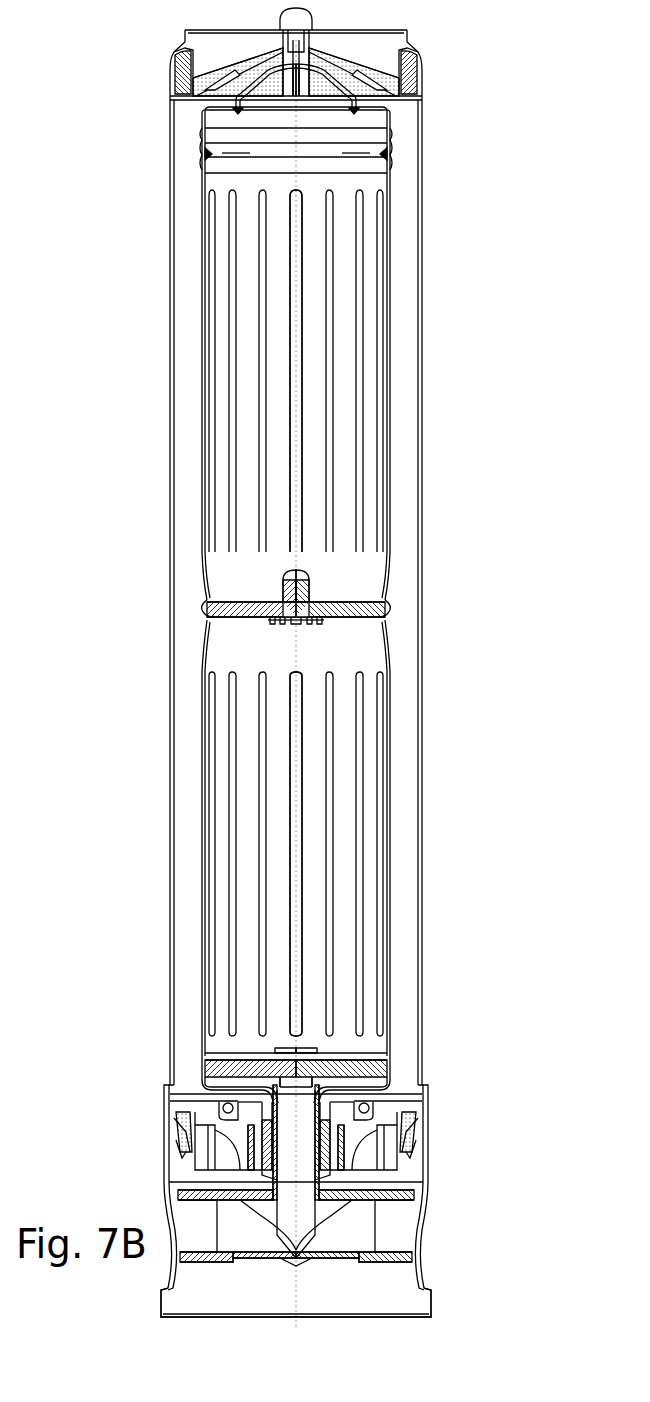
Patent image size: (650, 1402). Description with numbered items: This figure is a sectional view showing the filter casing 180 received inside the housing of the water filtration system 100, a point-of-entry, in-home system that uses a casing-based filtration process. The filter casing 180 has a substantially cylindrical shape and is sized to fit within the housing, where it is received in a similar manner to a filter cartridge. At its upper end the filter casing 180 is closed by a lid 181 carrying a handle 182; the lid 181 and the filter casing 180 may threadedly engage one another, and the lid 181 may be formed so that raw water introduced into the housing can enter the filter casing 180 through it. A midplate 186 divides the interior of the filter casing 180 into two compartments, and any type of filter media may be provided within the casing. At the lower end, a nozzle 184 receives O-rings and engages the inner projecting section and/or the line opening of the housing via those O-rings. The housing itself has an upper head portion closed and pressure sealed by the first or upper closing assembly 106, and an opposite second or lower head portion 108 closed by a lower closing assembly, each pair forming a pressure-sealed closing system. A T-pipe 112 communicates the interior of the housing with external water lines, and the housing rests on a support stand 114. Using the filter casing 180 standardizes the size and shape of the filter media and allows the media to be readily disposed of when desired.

The water filtration system 100 is at (155, 67).
The first or upper closing assembly 106 is at (377, 27).
The handle 182 is at (176, 95).
The lid 181 is at (206, 128).
The filter casing 180 is at (222, 318).
The midplate 186 is at (342, 606).
The nozzle 184 is at (190, 1133).
The second or lower head portion 108 is at (212, 1182).
The T-pipe 112 is at (278, 1262).
The support stand 114 is at (392, 1303).